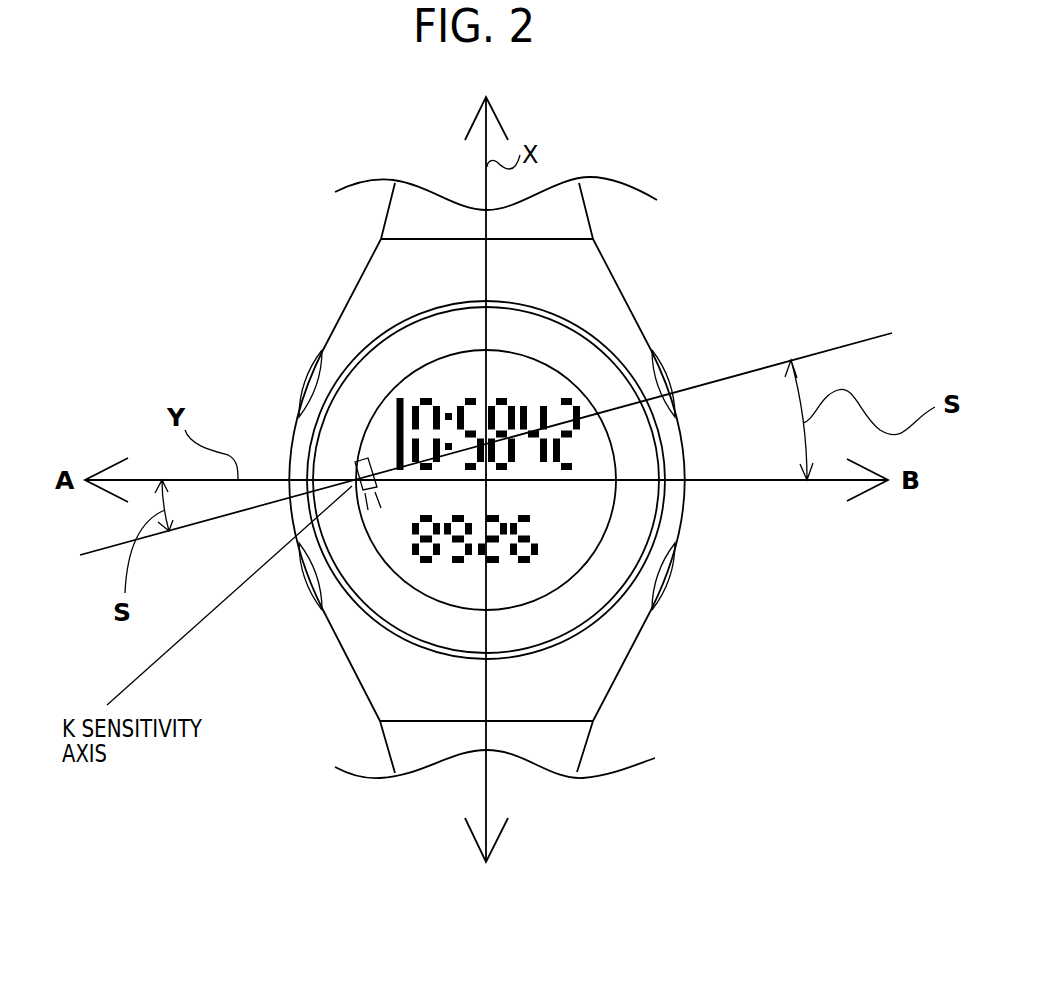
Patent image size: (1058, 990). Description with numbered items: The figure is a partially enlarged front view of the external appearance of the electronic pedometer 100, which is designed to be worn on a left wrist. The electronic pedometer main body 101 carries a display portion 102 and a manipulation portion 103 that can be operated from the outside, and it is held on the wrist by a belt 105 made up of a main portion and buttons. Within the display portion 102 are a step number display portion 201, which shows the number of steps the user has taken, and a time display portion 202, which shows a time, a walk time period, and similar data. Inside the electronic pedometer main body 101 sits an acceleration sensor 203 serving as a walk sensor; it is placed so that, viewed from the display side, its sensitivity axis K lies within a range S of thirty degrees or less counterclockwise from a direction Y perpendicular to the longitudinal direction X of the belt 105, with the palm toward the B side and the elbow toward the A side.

The electronic pedometer 100 is at (312, 280).
The electronic pedometer main body 101 is at (623, 290).
The display portion 102 is at (582, 498).
The manipulation portion 103 is at (298, 380).
The belt 105 is at (543, 220).
The step number display portion 201 is at (533, 565).
The time display portion 202 is at (537, 395).
The acceleration sensor 203 is at (370, 490).